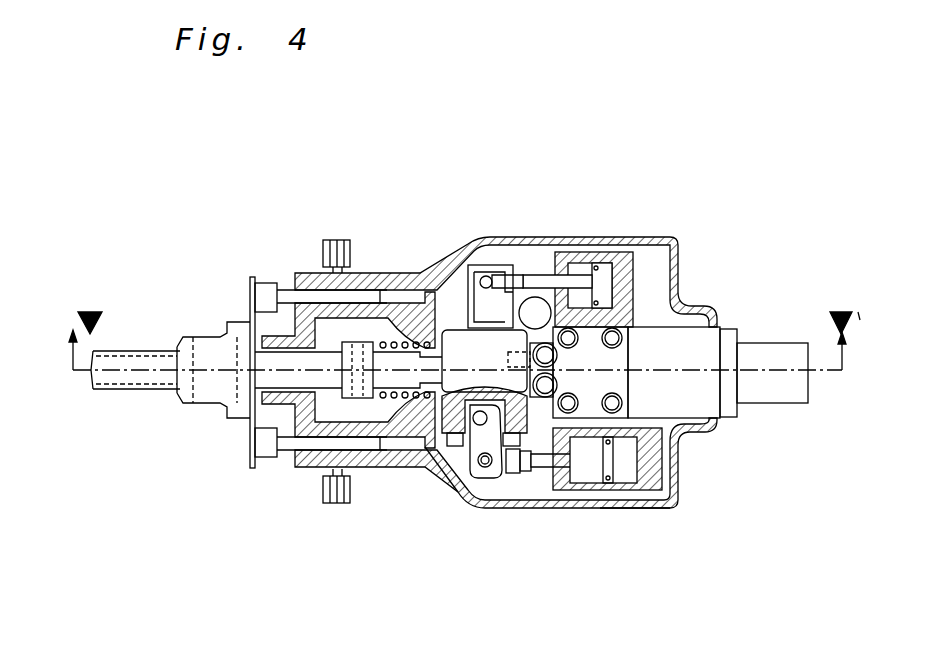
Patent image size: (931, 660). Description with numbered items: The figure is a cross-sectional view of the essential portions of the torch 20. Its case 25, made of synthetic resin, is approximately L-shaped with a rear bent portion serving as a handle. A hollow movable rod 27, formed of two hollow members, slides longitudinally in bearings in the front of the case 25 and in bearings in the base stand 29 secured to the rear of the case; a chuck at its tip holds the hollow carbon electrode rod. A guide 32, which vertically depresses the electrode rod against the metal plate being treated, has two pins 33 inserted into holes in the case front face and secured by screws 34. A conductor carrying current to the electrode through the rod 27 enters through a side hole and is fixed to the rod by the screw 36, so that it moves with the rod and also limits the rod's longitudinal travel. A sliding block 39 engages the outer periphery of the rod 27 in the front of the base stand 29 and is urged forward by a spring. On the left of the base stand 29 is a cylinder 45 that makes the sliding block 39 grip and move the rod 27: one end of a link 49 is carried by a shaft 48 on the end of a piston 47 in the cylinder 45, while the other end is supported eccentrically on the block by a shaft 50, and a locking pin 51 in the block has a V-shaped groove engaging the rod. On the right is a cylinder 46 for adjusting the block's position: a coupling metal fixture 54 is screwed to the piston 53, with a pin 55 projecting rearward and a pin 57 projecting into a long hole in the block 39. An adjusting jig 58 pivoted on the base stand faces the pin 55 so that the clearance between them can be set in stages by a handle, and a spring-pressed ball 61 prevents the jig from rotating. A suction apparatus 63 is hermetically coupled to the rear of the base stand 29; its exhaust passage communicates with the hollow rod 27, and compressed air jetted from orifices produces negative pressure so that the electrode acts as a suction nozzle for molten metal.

The torch 20 is at (373, 253).
The case 25 is at (392, 273).
The hollow movable rod 27 is at (263, 367).
The base stand 29 is at (683, 398).
The guide 32 is at (122, 357).
The pins 33 is at (290, 293).
The screws 34 is at (328, 247).
The screw 36 is at (350, 393).
The sliding block 39 is at (447, 335).
The cylinder 45 is at (643, 510).
The cylinder 46 is at (587, 297).
The piston 47 is at (585, 460).
The shaft 48 is at (492, 463).
The link 49 is at (470, 453).
The shaft 50 is at (472, 437).
The locking pin 51 is at (437, 443).
The piston 53 is at (548, 280).
The coupling metal fixture 54 is at (497, 278).
The pin 55 is at (478, 315).
The pin 57 is at (487, 276).
The adjusting jig 58 is at (533, 297).
The ball 61 is at (572, 267).
The suction apparatus 63 is at (777, 353).